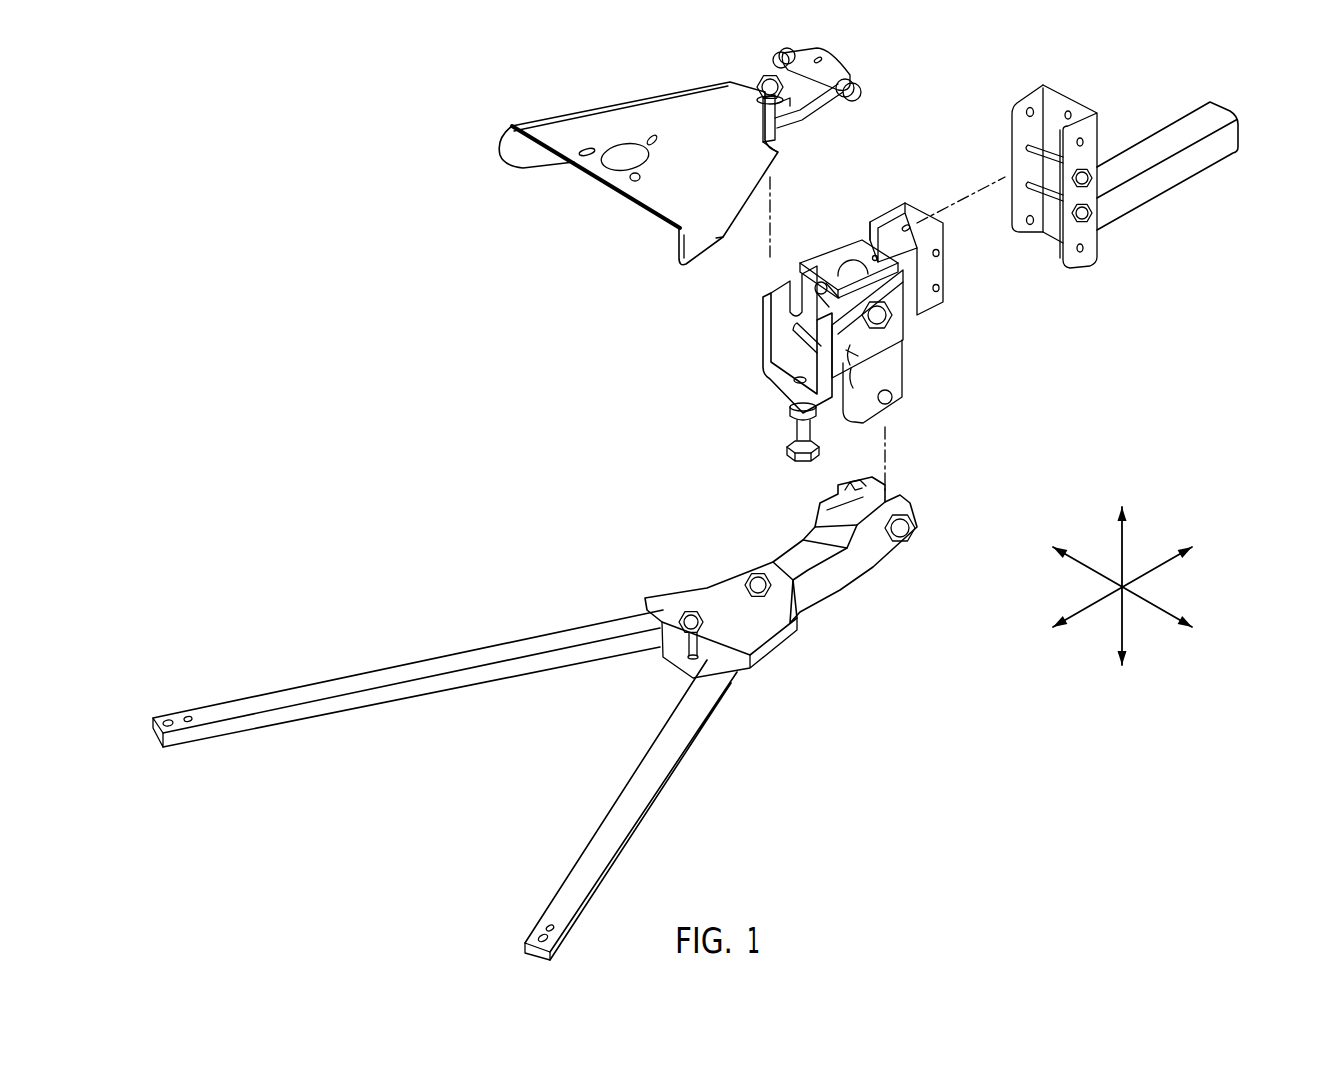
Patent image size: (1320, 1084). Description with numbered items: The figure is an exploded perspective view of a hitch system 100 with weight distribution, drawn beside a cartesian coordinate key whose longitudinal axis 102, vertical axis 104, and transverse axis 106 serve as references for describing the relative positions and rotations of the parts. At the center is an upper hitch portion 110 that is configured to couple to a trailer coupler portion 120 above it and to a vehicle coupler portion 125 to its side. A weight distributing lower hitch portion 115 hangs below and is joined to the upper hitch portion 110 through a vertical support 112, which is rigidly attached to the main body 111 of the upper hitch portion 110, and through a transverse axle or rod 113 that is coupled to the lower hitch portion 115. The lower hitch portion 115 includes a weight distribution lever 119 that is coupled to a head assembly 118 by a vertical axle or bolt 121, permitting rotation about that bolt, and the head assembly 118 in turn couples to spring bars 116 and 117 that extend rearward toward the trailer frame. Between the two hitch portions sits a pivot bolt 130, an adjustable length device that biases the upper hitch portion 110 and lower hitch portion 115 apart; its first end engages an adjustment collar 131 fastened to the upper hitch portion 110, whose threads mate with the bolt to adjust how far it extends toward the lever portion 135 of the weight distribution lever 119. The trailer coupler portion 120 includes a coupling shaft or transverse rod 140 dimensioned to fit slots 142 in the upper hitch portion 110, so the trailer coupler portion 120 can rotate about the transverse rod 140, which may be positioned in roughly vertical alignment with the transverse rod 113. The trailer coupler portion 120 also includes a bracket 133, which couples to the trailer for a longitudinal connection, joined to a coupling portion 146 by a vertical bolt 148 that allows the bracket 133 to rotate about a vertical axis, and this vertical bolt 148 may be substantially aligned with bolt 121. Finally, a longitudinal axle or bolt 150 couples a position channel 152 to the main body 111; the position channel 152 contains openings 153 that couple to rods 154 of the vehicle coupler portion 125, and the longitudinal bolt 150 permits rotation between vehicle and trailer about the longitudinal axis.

The hitch system 100 is at (258, 88).
The longitudinal axis 102 is at (1092, 600).
The vertical axis 104 is at (1123, 540).
The transverse axis 106 is at (1153, 600).
The upper hitch portion 110 is at (946, 328).
The main body 111 is at (770, 337).
The vertical support 112 is at (905, 375).
The transverse axle or rod 113 is at (905, 530).
The weight distributing lower hitch portion 115 is at (864, 610).
The spring bar 116 is at (403, 665).
The spring bar 117 is at (617, 798).
The head assembly 118 is at (673, 592).
The weight distribution lever 119 is at (817, 503).
The trailer coupler portion 120 is at (626, 78).
The vertical axle or bolt 121 is at (757, 573).
The vehicle coupler portion 125 is at (1189, 210).
The pivot bolt 130 is at (790, 436).
The adjustment collar 131 is at (783, 410).
The bracket 133 is at (573, 115).
The lever portion 135 is at (800, 553).
The coupling shaft or transverse rod 140 is at (858, 100).
The slots 142 is at (825, 285).
The coupling portion 146 is at (840, 63).
The vertical bolt 148 is at (765, 82).
The longitudinal axle or bolt 150 is at (855, 262).
The position channel 152 is at (890, 212).
The openings 153 is at (940, 288).
The rods 154 is at (1028, 185).